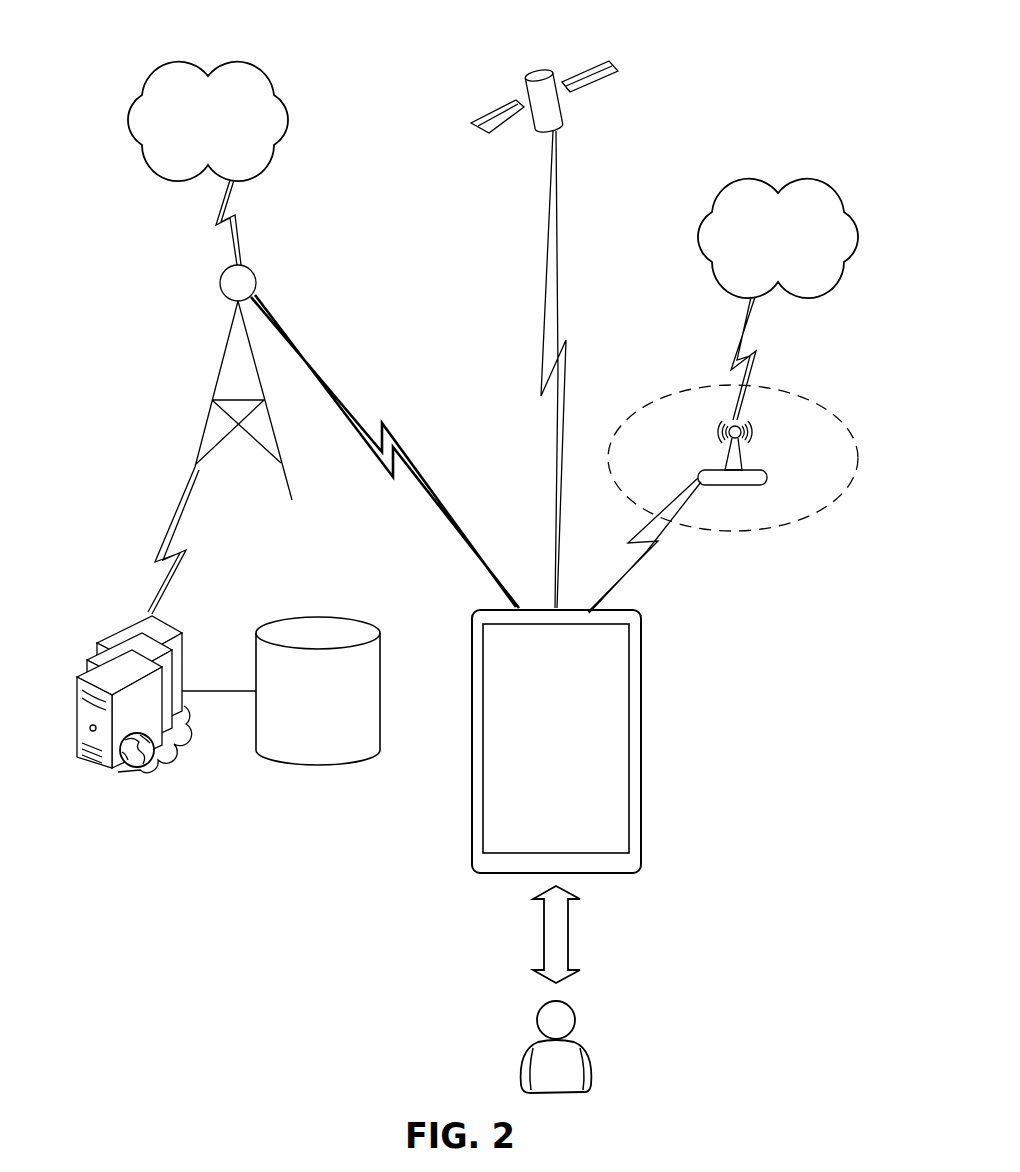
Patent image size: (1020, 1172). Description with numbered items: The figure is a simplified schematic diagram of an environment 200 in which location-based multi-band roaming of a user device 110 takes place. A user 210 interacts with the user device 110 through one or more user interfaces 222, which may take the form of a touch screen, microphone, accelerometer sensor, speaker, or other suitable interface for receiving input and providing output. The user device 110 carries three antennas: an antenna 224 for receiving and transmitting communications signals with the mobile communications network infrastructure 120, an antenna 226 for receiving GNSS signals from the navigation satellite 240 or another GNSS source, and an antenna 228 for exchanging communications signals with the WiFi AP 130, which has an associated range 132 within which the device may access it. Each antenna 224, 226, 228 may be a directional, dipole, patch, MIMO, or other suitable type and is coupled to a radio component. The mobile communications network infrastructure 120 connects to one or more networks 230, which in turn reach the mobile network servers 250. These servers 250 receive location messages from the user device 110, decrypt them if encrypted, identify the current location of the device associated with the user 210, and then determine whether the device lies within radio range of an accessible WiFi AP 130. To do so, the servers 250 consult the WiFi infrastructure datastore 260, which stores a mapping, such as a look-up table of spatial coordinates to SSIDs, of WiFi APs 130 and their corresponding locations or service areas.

The environment 200 is at (789, 41).
The user device 110 is at (600, 741).
The mobile communications network infrastructure 120 is at (203, 421).
The WiFi AP 130 is at (767, 478).
The range 132 is at (702, 382).
The user 210 is at (587, 1048).
The user interface 222 is at (598, 728).
The antenna 224 is at (516, 608).
The antenna 226 is at (556, 608).
The antenna 228 is at (590, 608).
The network(s) 230 is at (493, 180).
The navigation satellite 240 is at (612, 64).
The mobile network server(s) 250 is at (184, 627).
The WiFi infrastructure datastore 260 is at (380, 692).